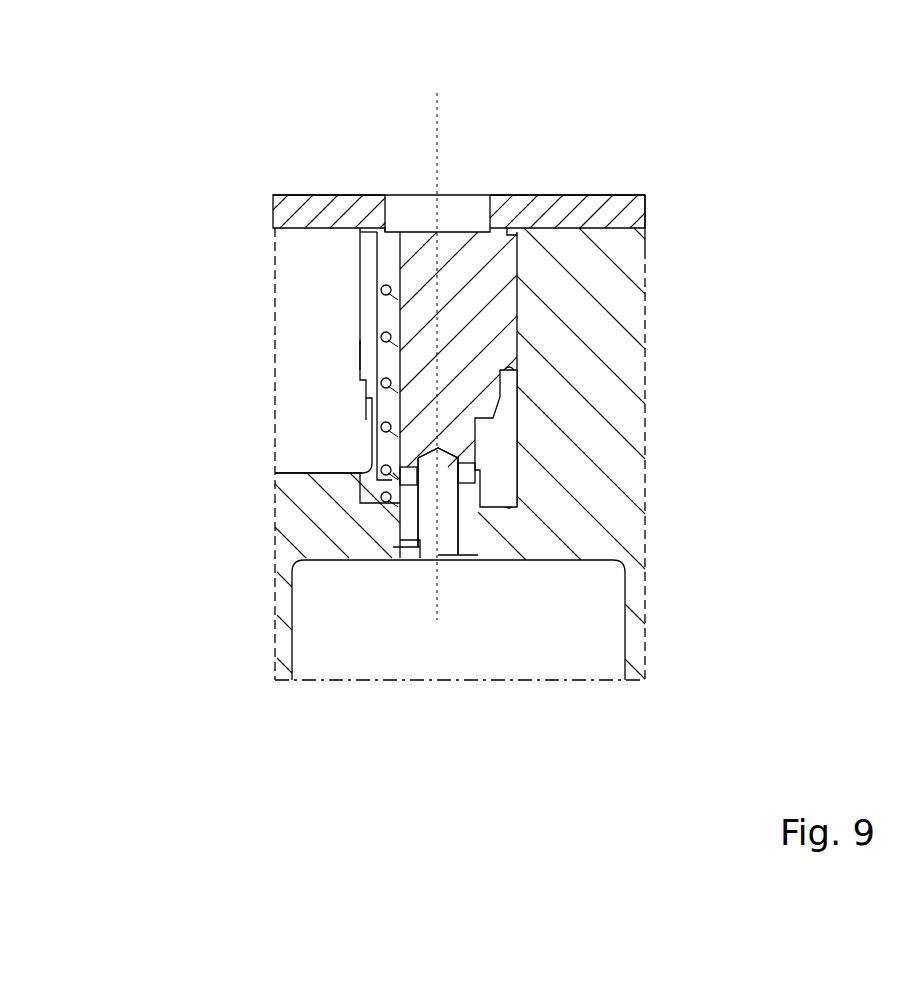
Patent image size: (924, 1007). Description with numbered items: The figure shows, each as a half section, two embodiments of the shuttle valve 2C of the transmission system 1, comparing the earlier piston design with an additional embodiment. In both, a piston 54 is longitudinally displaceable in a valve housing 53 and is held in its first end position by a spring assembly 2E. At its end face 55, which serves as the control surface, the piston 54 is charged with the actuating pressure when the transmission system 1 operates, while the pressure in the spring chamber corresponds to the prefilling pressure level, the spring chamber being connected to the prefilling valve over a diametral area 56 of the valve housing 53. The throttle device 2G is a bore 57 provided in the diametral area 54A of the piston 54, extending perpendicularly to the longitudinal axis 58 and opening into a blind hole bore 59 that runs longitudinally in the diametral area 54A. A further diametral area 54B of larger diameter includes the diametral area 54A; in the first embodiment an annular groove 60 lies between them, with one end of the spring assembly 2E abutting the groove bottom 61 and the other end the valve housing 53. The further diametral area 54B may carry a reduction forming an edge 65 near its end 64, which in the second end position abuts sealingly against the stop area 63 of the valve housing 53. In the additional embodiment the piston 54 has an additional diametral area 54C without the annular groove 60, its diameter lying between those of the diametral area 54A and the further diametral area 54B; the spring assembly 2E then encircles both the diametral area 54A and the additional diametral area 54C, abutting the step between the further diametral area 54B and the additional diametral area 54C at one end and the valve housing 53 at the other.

The transmission system 1 is at (229, 140).
The groove bottom 61 is at (355, 195).
The end face 55 is at (400, 195).
The longitudinal axis 58 is at (553, 195).
The valve housing 53 is at (308, 247).
The shuttle valve 2C is at (252, 253).
The piston 54 is at (342, 311).
The further diametral area 54B is at (347, 333).
The annular groove 60 is at (360, 355).
The edge 65 is at (366, 410).
The end 64 is at (398, 474).
The spring assembly 2E is at (400, 486).
The bore 57 is at (381, 497).
The stop area 63 is at (400, 540).
The additional diametral area 54C is at (488, 400).
The diametral area 56 is at (500, 510).
The throttle device 2G is at (438, 501).
The diametral area 54A is at (503, 557).
The blind hole bore 59 is at (413, 560).